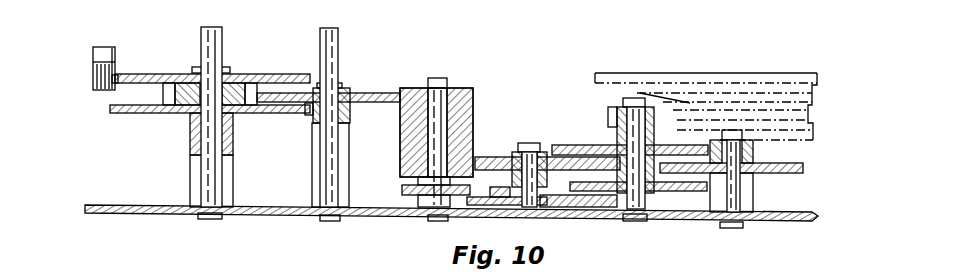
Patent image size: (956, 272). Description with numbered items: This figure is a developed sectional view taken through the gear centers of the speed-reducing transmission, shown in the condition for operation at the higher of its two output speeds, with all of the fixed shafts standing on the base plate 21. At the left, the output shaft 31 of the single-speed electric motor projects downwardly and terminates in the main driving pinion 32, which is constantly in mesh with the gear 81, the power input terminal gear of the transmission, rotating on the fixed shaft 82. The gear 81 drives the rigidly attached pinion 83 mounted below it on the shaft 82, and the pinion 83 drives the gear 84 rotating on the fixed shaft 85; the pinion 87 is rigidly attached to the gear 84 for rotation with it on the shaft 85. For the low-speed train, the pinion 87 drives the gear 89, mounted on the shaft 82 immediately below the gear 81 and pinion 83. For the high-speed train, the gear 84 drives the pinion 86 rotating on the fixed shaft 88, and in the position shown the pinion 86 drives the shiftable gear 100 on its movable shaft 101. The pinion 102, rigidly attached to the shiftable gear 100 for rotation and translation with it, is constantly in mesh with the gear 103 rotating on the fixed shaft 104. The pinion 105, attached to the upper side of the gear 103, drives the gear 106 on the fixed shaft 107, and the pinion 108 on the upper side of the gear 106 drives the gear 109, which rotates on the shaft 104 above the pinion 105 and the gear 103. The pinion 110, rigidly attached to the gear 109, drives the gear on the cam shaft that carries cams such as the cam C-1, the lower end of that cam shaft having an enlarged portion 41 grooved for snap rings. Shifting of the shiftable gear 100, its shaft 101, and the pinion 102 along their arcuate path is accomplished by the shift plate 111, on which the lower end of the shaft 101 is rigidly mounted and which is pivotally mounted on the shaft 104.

The base plate 21 is at (255, 214).
The output shaft 31 is at (104, 48).
The main driving pinion 32 is at (92, 88).
The enlarged lower cam shaft portion 41 is at (755, 194).
The gear 81 is at (150, 74).
The fixed shaft 82 is at (202, 36).
The pinion 83 is at (172, 105).
The gear 84 is at (364, 93).
The fixed shaft 85 is at (320, 38).
The pinion 86 is at (474, 100).
The pinion 87 is at (306, 115).
The fixed shaft 88 is at (445, 78).
The gear 89 is at (122, 113).
The shiftable gear 100 is at (493, 197).
The movable shaft 101 is at (529, 143).
The pinion 102 is at (492, 197).
The gear 103 is at (700, 191).
The fixed shaft 104 is at (637, 98).
The pinion 105 is at (595, 157).
The gear 106 is at (800, 174).
The fixed shaft 107 is at (733, 130).
The pinion 108 is at (755, 150).
The gear 109 is at (560, 145).
The pinion 110 is at (612, 110).
The shift plate 111 is at (578, 207).
The cam C-1 is at (720, 72).